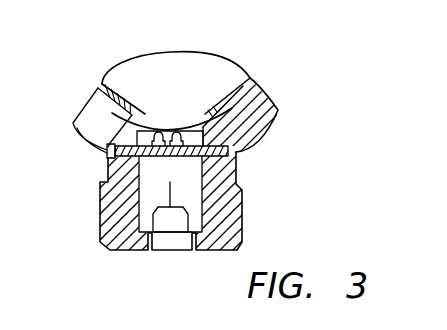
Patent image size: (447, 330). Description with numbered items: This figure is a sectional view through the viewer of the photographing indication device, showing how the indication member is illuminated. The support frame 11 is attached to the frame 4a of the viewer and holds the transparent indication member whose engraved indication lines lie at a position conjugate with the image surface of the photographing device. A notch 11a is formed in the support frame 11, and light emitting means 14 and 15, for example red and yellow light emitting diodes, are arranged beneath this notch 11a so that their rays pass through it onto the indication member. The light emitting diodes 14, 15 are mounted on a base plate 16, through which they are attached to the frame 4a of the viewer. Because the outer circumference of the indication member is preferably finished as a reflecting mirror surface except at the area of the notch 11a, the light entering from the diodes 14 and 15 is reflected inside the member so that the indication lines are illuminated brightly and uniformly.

The frame 4a is at (268, 121).
The support frame 11 is at (250, 78).
The notch 11a is at (163, 127).
The light emitting means 14 is at (151, 129).
The light emitting means 15 is at (182, 131).
The base plate 16 is at (106, 158).